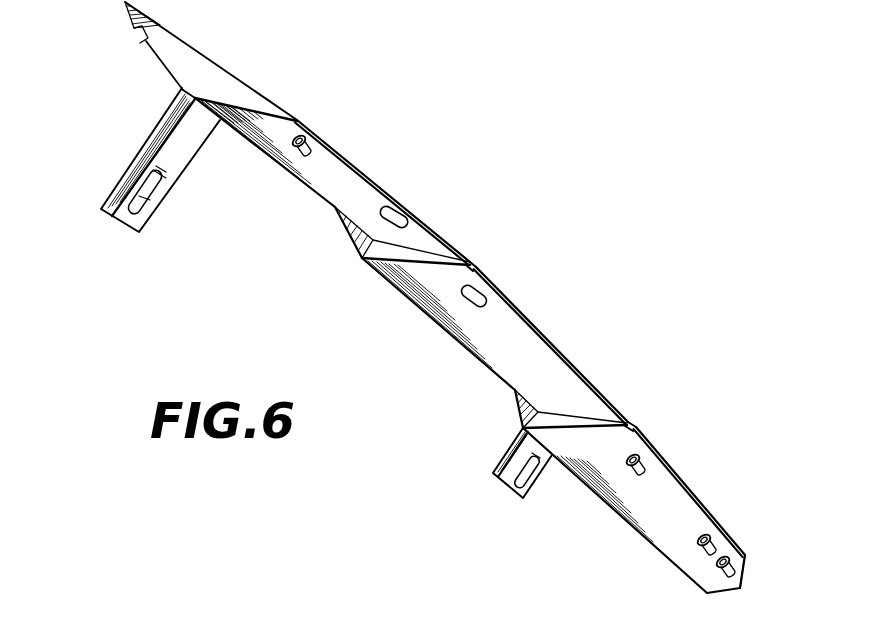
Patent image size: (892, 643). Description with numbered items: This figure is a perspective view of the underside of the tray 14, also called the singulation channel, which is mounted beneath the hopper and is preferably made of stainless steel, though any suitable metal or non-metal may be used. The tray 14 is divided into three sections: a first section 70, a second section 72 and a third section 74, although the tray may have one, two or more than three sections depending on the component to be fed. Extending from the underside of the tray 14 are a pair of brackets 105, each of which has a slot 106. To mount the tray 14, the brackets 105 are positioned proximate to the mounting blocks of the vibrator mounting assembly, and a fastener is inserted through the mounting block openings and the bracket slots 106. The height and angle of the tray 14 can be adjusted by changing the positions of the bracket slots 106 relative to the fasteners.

The tray 14 is at (435, 297).
The first section 70 is at (343, 118).
The second section 72 is at (561, 312).
The third section 74 is at (692, 460).
The bracket 105 is at (176, 180).
The slot 106 is at (153, 212).